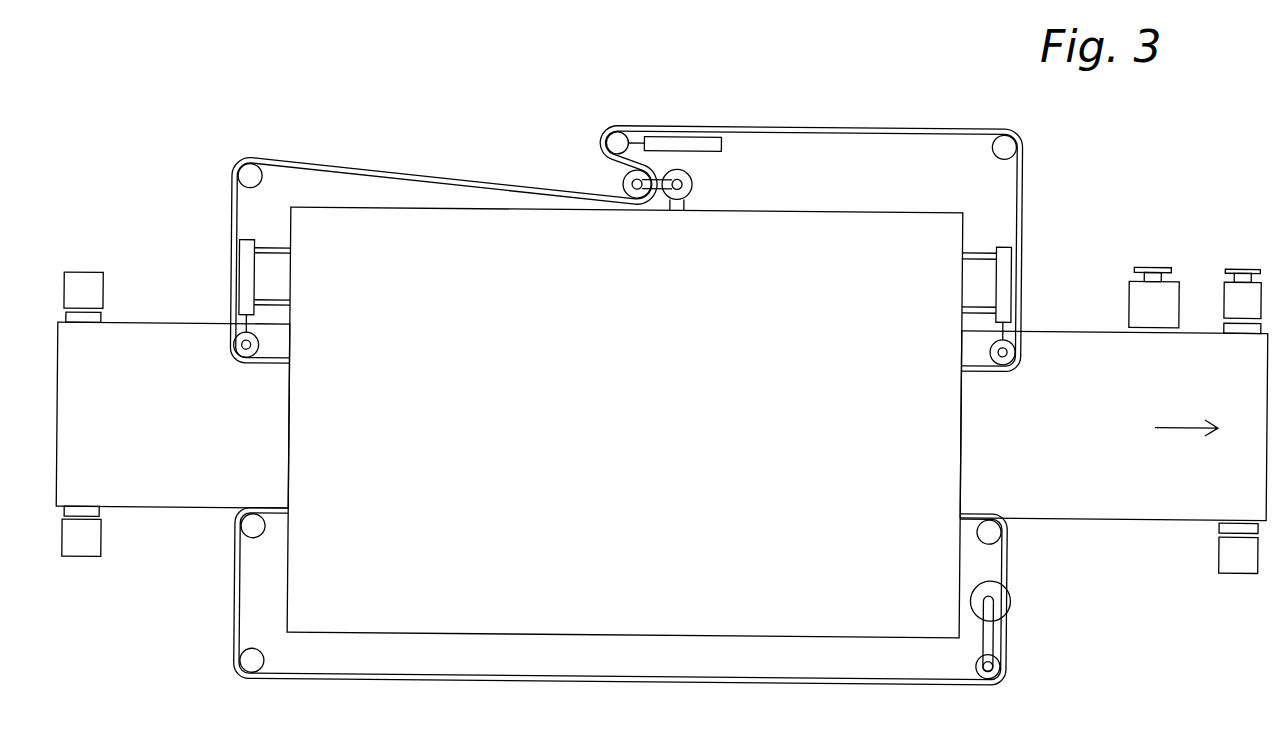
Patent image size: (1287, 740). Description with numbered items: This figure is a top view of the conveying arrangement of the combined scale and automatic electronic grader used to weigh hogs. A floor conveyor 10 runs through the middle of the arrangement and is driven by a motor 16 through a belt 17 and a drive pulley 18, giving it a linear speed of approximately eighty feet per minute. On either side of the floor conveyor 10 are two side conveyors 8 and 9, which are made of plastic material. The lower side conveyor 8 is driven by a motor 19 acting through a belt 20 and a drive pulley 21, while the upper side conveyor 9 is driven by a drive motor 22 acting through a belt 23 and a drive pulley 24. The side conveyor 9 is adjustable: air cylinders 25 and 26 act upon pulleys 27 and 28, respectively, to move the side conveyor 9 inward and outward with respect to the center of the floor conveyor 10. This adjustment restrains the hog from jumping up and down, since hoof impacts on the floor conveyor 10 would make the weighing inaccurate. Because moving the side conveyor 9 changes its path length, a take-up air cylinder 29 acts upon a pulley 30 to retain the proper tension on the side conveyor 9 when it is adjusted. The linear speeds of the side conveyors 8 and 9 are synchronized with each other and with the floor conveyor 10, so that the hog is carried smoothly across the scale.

The side conveyor 8 is at (1009, 556).
The side conveyor 9 is at (1021, 156).
The floor conveyor 10 is at (1075, 328).
The motor 16 is at (1178, 296).
The belt 17 is at (1178, 267).
The drive pulley 18 is at (1244, 267).
The motor 19 is at (1012, 598).
The belt 20 is at (982, 647).
The drive pulley 21 is at (1002, 662).
The drive motor 22 is at (691, 182).
The belt 23 is at (653, 177).
The drive pulley 24 is at (620, 182).
The air cylinder 25 is at (1003, 244).
The air cylinder 26 is at (238, 292).
The pulley 27 is at (1014, 349).
The pulley 28 is at (233, 348).
The take-up air cylinder 29 is at (719, 144).
The pulley 30 is at (614, 132).